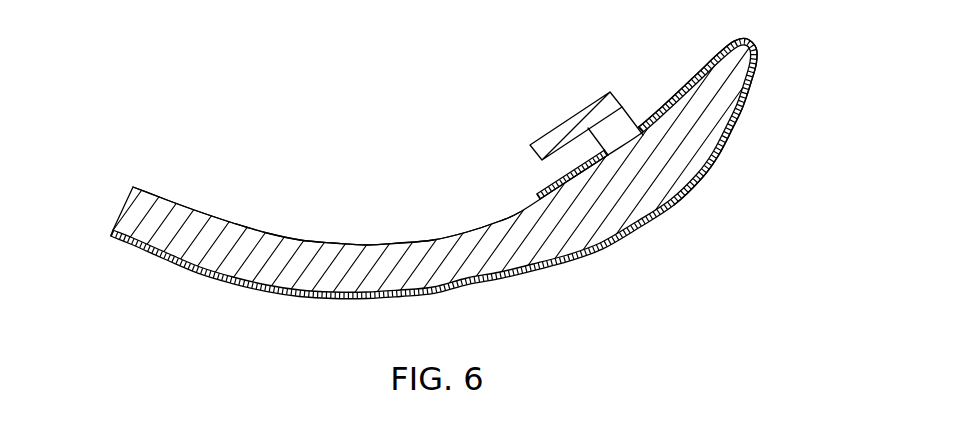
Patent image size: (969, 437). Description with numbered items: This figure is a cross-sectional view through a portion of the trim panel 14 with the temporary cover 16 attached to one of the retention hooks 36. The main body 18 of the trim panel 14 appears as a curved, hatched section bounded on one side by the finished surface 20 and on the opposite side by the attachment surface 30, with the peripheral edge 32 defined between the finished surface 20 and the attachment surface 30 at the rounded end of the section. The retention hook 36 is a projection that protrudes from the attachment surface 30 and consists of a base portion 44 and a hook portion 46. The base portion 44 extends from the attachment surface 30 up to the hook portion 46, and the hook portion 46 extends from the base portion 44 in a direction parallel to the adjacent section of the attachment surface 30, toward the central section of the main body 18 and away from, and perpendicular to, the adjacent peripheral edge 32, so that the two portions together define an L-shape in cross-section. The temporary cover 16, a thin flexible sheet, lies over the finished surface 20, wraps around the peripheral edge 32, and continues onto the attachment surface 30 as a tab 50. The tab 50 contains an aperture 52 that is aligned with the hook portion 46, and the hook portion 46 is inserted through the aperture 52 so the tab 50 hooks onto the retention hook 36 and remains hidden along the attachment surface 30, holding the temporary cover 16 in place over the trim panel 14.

The trim panel 14 is at (484, 165).
The temporary cover 16 is at (757, 70).
The main body 18 is at (573, 217).
The finished surface 20 is at (503, 284).
The attachment surface 30 is at (381, 240).
The peripheral edge 32 is at (745, 40).
The retention hook 36 is at (563, 112).
The base portion 44 is at (622, 127).
The hook portion 46 is at (563, 122).
The tab 50 is at (540, 194).
The aperture 52 is at (660, 110).